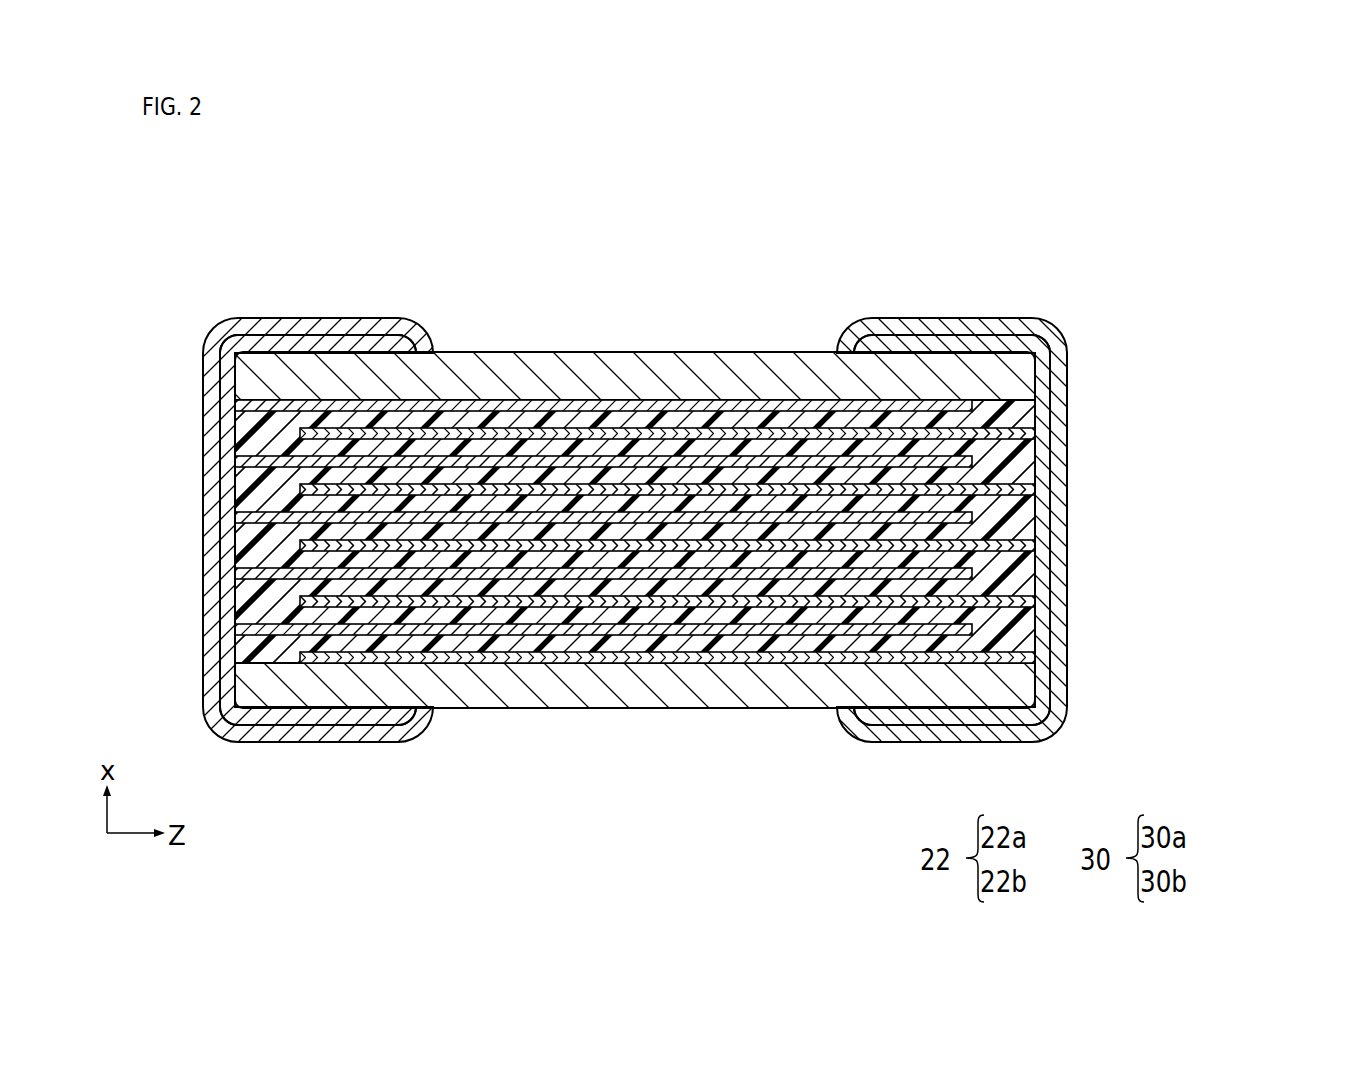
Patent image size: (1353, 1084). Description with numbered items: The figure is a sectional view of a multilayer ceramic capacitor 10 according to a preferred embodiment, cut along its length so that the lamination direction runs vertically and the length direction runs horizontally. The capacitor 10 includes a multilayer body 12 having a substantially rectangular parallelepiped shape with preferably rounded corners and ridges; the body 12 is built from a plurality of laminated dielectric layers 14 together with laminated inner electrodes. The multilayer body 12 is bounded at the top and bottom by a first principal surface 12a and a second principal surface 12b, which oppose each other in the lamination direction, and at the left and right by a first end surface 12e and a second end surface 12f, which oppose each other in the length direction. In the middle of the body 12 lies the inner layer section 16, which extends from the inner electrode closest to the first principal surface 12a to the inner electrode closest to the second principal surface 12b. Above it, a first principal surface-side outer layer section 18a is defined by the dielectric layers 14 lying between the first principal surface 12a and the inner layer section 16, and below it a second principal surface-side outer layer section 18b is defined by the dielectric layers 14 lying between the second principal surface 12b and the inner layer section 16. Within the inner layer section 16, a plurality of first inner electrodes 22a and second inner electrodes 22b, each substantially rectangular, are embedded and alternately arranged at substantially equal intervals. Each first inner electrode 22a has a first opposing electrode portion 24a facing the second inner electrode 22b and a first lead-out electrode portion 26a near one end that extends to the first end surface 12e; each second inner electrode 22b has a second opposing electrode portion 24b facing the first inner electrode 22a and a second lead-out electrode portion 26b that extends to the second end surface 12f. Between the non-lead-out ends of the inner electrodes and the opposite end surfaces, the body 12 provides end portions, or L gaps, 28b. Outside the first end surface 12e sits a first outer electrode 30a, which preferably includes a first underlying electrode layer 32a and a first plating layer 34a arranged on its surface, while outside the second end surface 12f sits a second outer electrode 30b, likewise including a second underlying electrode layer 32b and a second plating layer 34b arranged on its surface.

The multilayer ceramic capacitor 10 is at (163, 248).
The multilayer body 12 is at (725, 351).
The first principal surface 12a is at (612, 352).
The second principal surface 12b is at (650, 710).
The first end surface 12e is at (235, 498).
The second end surface 12f is at (1037, 516).
The dielectric layers 14 is at (717, 487).
The inner layer section 16 is at (679, 487).
The first principal surface-side outer layer section 18a is at (1033, 352).
The second principal surface-side outer layer section 18b is at (1042, 663).
The first inner electrodes 22a is at (490, 510).
The second inner electrodes 22b is at (770, 510).
The first opposing electrode portion 24a is at (587, 517).
The second opposing electrode portion 24b is at (648, 543).
The first lead-out electrode portion 26a is at (257, 460).
The second lead-out electrode portion 26b is at (1030, 492).
The end portions (L gaps) 28b is at (300, 400).
The first outer electrode 30a is at (329, 470).
The second outer electrode 30b is at (942, 470).
The first underlying electrode layer 32a is at (388, 340).
The second underlying electrode layer 32b is at (952, 258).
The first plating layer 34a is at (338, 320).
The second plating layer 34b is at (917, 323).